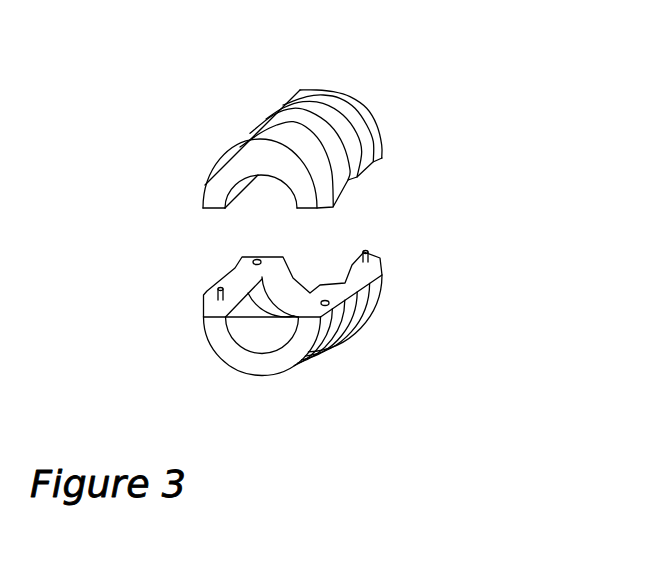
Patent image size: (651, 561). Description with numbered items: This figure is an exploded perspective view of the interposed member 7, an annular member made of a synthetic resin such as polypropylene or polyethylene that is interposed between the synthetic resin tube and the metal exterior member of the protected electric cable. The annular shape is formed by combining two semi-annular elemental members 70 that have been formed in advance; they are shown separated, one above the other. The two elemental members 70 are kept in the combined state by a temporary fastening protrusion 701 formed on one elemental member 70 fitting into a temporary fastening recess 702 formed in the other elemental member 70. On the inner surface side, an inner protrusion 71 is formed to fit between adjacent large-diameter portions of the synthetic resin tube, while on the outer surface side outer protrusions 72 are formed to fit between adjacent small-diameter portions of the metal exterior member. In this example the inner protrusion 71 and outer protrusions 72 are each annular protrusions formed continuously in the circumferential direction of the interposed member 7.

The interposed member 7 is at (460, 85).
The elemental member 70 is at (398, 148).
The inner protrusion 71 is at (275, 305).
The outer protrusion 72 is at (303, 93).
The temporary fastening protrusion 701 is at (215, 296).
The temporary fastening recess 702 is at (252, 259).